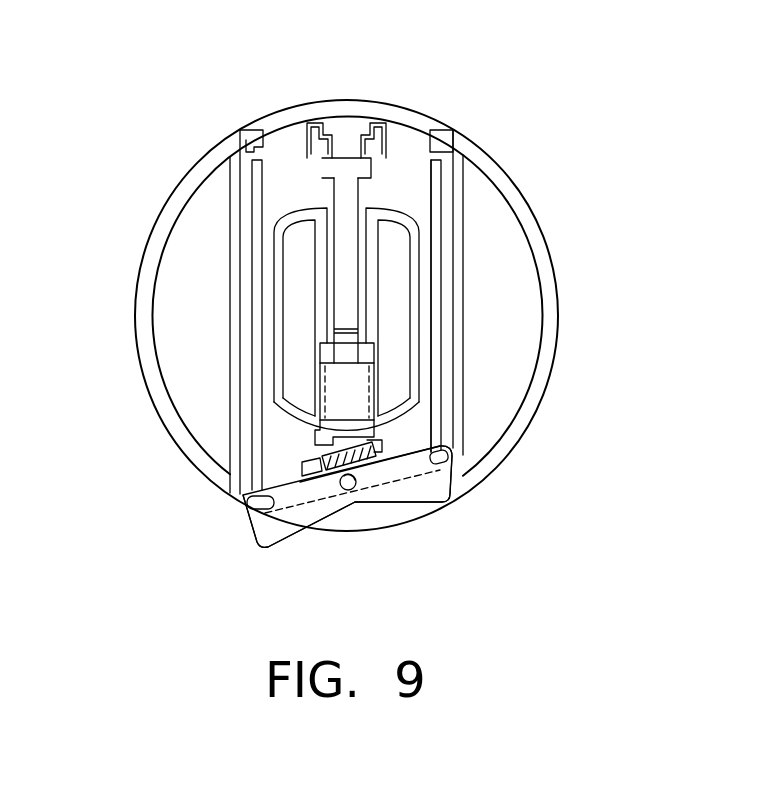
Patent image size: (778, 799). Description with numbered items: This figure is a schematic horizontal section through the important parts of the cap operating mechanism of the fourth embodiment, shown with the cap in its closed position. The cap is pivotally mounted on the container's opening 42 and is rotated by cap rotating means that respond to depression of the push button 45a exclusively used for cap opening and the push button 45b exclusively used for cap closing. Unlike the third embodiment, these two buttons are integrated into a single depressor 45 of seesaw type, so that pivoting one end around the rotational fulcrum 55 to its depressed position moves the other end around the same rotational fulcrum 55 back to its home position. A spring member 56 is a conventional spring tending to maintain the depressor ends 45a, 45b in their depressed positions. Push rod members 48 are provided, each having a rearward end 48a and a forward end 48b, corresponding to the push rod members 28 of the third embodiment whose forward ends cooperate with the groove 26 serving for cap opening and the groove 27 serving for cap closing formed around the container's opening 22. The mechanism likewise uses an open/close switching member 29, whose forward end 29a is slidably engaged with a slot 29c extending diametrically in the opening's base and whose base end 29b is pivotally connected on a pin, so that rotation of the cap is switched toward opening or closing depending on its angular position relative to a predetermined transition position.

The container's opening 22 is at (293, 262).
The groove serving for cap opening 26 is at (240, 133).
The groove serving for cap closing 27 is at (437, 140).
The push rod member 28 is at (437, 245).
The open/close switching member 29 is at (345, 288).
The forward end 29a is at (352, 353).
The base end 29b is at (345, 198).
The slot 29c is at (372, 372).
The container's opening 42 is at (332, 142).
The depressor 45 is at (392, 505).
The push button exclusively used for cap opening 45a is at (273, 547).
The push button exclusively used for cap closing 45b is at (442, 505).
The push rod member 48 is at (245, 340).
The rearward end 48a is at (243, 508).
The forward end 48b is at (250, 172).
The rotational fulcrum 55 is at (350, 505).
The spring member 56 is at (380, 453).